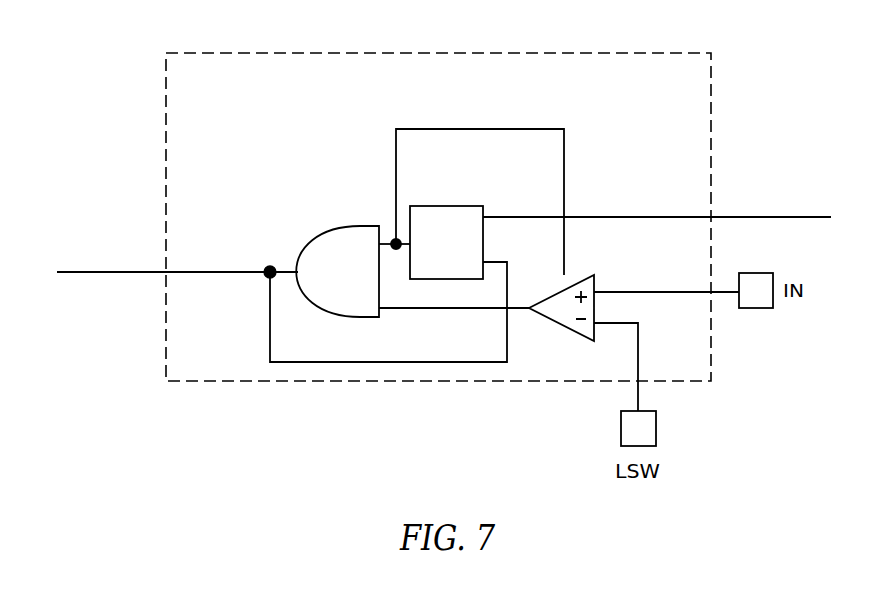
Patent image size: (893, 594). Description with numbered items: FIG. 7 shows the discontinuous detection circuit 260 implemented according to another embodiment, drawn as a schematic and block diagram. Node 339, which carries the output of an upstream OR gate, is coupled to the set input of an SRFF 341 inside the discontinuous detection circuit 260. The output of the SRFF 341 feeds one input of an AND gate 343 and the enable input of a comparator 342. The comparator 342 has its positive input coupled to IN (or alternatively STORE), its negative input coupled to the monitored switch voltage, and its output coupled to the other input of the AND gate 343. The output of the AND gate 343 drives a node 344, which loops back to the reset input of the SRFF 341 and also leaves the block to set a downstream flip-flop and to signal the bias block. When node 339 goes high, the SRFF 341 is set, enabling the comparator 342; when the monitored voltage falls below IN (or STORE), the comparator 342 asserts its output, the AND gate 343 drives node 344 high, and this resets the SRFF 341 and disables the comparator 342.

The discontinuous detection circuit 260 is at (287, 53).
The node 339 is at (745, 217).
The SRFF 341 is at (460, 206).
The comparator 342 is at (560, 328).
The AND gate 343 is at (309, 246).
The node 344 is at (109, 270).